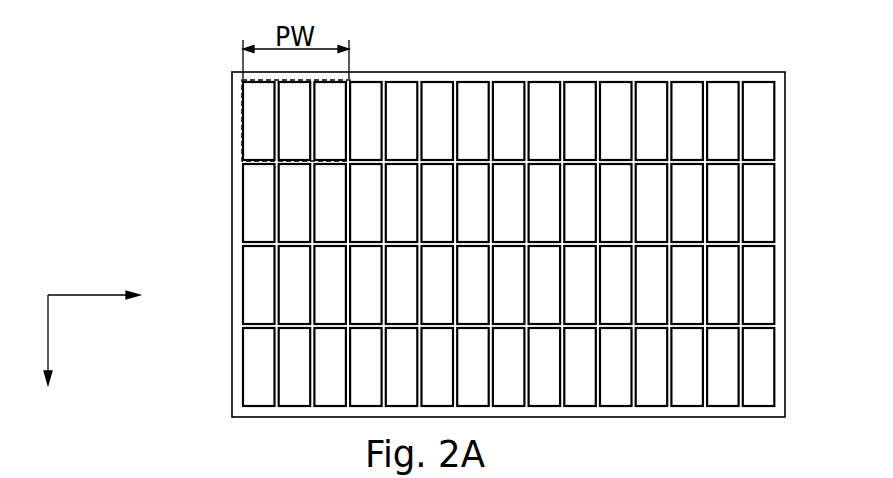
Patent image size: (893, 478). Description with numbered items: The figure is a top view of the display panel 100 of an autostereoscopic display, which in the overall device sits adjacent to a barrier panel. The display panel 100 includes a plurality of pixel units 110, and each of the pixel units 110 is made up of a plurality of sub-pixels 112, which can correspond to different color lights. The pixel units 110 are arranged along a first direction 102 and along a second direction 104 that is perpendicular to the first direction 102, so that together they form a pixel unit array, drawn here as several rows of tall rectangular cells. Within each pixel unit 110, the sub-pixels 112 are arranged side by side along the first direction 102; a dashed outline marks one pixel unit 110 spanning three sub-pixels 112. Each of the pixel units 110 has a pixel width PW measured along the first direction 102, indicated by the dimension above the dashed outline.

The display panel 100 is at (98, 87).
The pixel unit 110 is at (242, 149).
The sub-pixel 112 is at (257, 118).
The first direction 102 is at (118, 296).
The second direction 104 is at (56, 360).